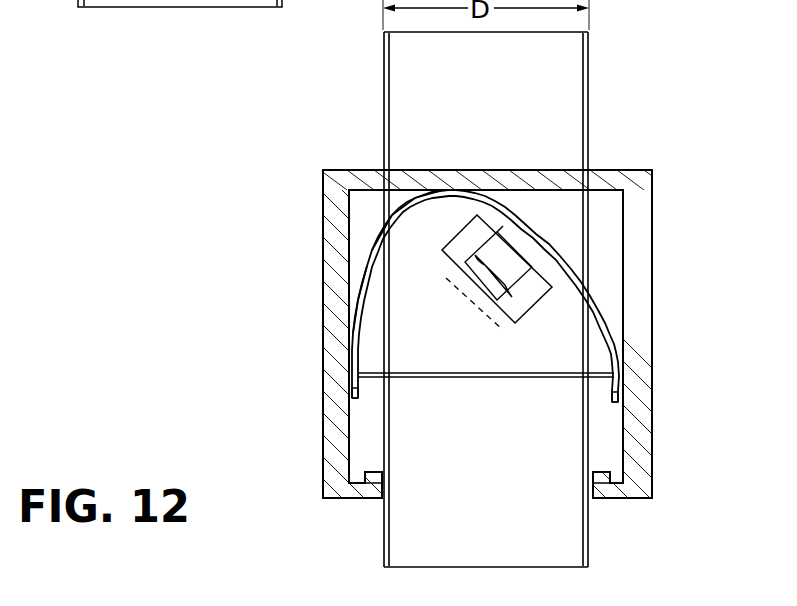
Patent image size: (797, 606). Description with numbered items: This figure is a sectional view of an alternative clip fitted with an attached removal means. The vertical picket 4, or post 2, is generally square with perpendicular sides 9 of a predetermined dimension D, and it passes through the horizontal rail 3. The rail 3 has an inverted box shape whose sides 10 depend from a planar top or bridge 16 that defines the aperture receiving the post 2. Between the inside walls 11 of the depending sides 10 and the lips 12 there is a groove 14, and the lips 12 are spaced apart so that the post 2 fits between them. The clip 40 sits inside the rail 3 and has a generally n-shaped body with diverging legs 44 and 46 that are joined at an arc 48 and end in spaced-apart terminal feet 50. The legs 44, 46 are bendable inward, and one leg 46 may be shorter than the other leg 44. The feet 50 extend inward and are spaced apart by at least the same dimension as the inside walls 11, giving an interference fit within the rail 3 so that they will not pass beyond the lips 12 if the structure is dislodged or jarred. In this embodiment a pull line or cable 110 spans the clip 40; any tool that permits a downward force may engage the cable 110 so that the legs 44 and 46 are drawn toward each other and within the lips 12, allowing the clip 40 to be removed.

The post 2 is at (326, 0).
The horizontal rail 3 is at (676, 428).
The vertical picket 4 is at (8, 6).
The perpendicular sides 9 is at (493, 98).
The sides 10 is at (392, 320).
The inside walls 11 is at (621, 424).
The lips 12 is at (373, 482).
The groove 14 is at (352, 485).
The planar top or bridge 16 is at (621, 171).
The clip 40 is at (558, 245).
The leg 44 is at (577, 307).
The leg 46 is at (371, 317).
The arc 48 is at (400, 205).
The terminal feet 50 is at (359, 401).
The pull line or cable 110 is at (428, 377).